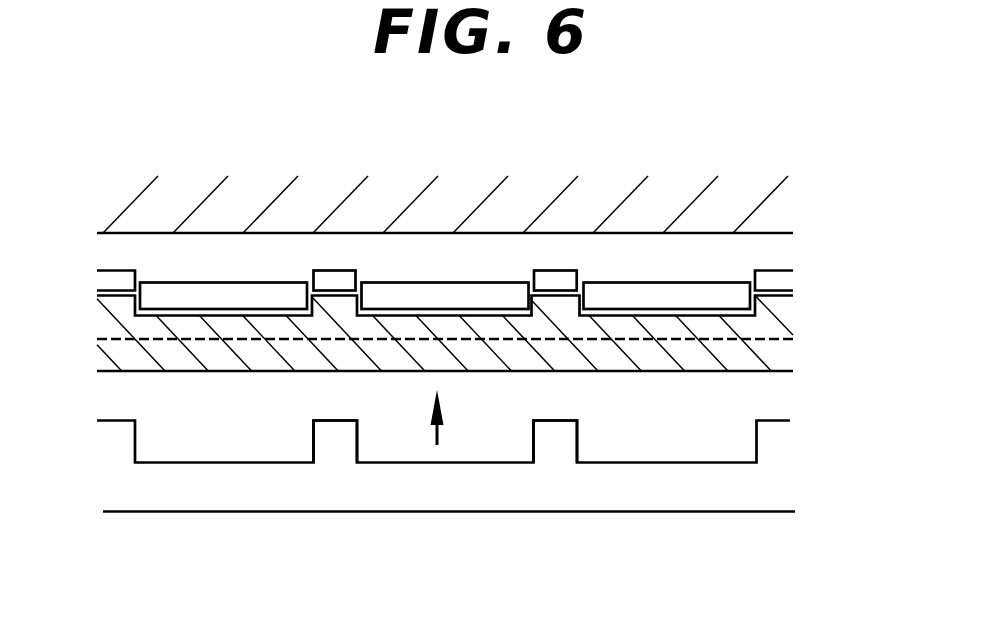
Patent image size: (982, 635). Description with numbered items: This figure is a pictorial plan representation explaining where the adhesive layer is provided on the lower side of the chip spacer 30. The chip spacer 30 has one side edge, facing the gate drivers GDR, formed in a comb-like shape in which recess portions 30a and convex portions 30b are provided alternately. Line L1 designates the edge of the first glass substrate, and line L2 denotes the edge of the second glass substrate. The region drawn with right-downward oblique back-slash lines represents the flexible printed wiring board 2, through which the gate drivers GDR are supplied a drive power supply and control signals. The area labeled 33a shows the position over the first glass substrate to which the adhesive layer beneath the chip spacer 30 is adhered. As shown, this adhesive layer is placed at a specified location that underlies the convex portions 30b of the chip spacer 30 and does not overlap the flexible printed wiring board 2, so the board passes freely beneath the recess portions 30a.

The edge of the glass substrate SUB2 L2 is at (767, 232).
The adhesive layer position 33a is at (555, 277).
The gate drivers GDR is at (667, 293).
The edge of the glass substrate SUB1 L1 is at (770, 337).
The flexible printed wiring board 2 is at (777, 352).
The recess portions 30a is at (722, 443).
The convex portions 30b is at (573, 438).
The chip spacer 30 is at (623, 495).